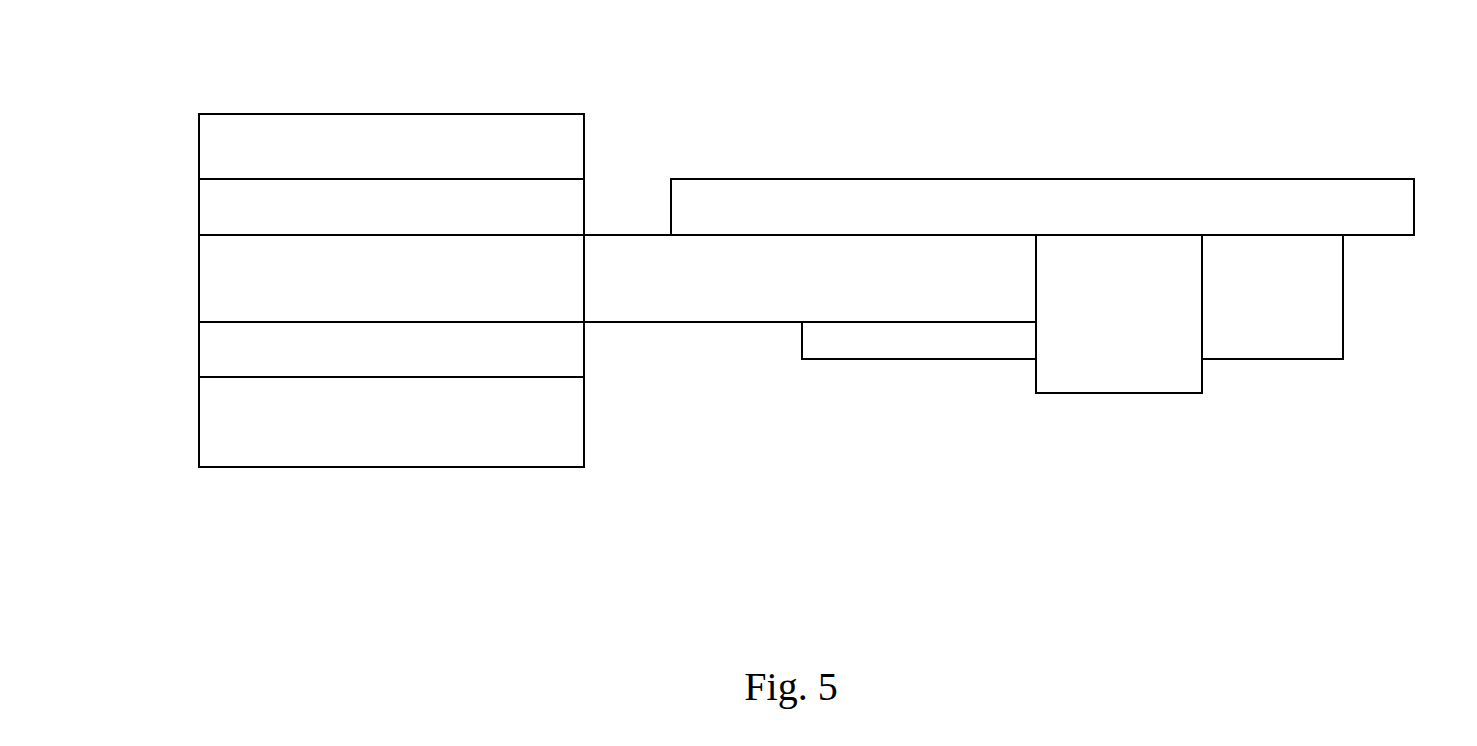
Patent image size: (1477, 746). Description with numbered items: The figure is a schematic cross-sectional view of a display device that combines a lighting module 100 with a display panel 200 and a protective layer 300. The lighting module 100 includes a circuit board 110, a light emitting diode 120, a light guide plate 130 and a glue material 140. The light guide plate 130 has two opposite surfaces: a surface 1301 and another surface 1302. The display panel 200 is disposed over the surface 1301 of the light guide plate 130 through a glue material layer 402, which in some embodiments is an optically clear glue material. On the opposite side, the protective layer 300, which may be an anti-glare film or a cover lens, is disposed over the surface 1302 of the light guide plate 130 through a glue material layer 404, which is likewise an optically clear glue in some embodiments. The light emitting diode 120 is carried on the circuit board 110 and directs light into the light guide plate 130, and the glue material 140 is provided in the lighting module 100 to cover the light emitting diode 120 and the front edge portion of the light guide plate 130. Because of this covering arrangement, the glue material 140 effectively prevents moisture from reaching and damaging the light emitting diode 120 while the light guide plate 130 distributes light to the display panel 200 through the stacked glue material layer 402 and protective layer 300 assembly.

The lighting module 100 is at (1408, 140).
The circuit board 110 is at (1048, 182).
The light emitting diode 120 is at (1132, 383).
The light guide plate 130 is at (706, 308).
The surface of the light guide plate 1301 is at (206, 332).
The another surface of the light guide plate 1302 is at (206, 225).
The glue material 140 is at (1297, 345).
The display panel 200 is at (207, 429).
The protective layer 300 is at (207, 150).
The glue material layer 402 is at (207, 363).
The glue material layer 404 is at (207, 197).